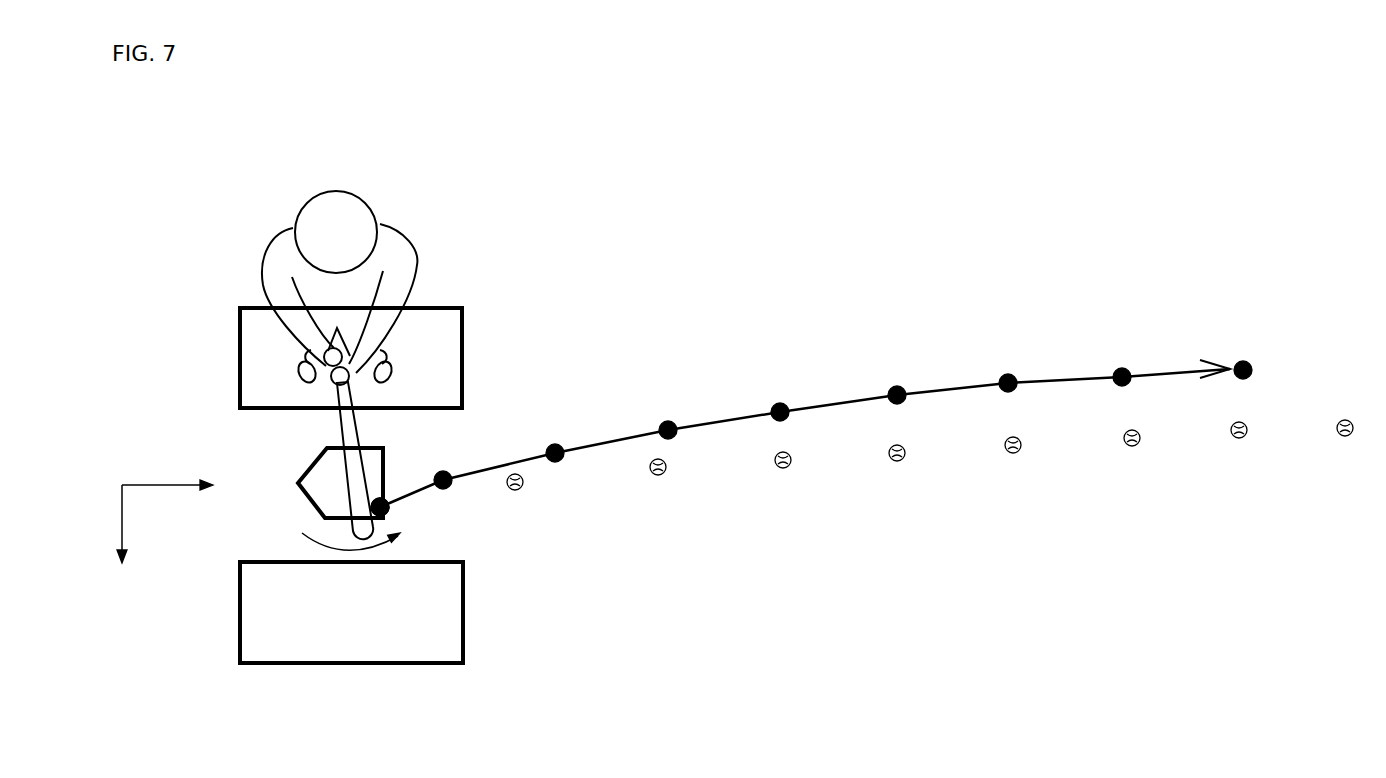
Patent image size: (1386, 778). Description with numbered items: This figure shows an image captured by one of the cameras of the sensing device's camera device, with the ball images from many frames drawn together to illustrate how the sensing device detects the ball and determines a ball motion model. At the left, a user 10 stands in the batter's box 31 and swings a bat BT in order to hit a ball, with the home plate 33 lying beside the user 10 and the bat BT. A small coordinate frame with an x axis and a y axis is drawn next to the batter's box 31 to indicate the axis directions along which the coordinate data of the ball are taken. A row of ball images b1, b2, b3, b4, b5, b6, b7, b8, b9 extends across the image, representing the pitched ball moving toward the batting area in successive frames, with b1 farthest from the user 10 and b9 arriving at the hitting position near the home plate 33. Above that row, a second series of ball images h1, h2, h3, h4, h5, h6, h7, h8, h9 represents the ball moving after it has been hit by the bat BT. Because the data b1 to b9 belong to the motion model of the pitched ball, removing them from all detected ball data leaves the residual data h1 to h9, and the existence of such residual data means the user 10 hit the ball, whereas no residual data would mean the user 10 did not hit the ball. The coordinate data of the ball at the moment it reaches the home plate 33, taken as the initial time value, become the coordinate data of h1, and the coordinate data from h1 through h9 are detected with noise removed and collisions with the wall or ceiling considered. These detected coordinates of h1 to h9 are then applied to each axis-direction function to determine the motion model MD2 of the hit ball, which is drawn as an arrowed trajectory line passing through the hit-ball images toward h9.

The user 10 is at (422, 226).
The batter's box 31 is at (462, 341).
The home plate 33 is at (320, 457).
The bat BT is at (347, 433).
The motion model of the hit ball MD2 is at (840, 397).
The hit ball image h1 is at (388, 498).
The hit ball image h2 is at (452, 468).
The hit ball image h3 is at (556, 441).
The hit ball image h4 is at (669, 418).
The hit ball image h5 is at (782, 398).
The hit ball image h6 is at (897, 382).
The hit ball image h7 is at (1008, 369).
The hit ball image h8 is at (1122, 363).
The hit ball image h9 is at (1248, 356).
The pitched ball image b1 is at (1345, 446).
The pitched ball image b2 is at (1240, 448).
The pitched ball image b3 is at (1133, 456).
The pitched ball image b4 is at (1013, 463).
The pitched ball image b5 is at (897, 471).
The pitched ball image b6 is at (783, 477).
The pitched ball image b7 is at (658, 483).
The pitched ball image b8 is at (517, 499).
The pitched ball image b9 is at (393, 507).
The x axis x is at (121, 541).
The y axis y is at (177, 486).